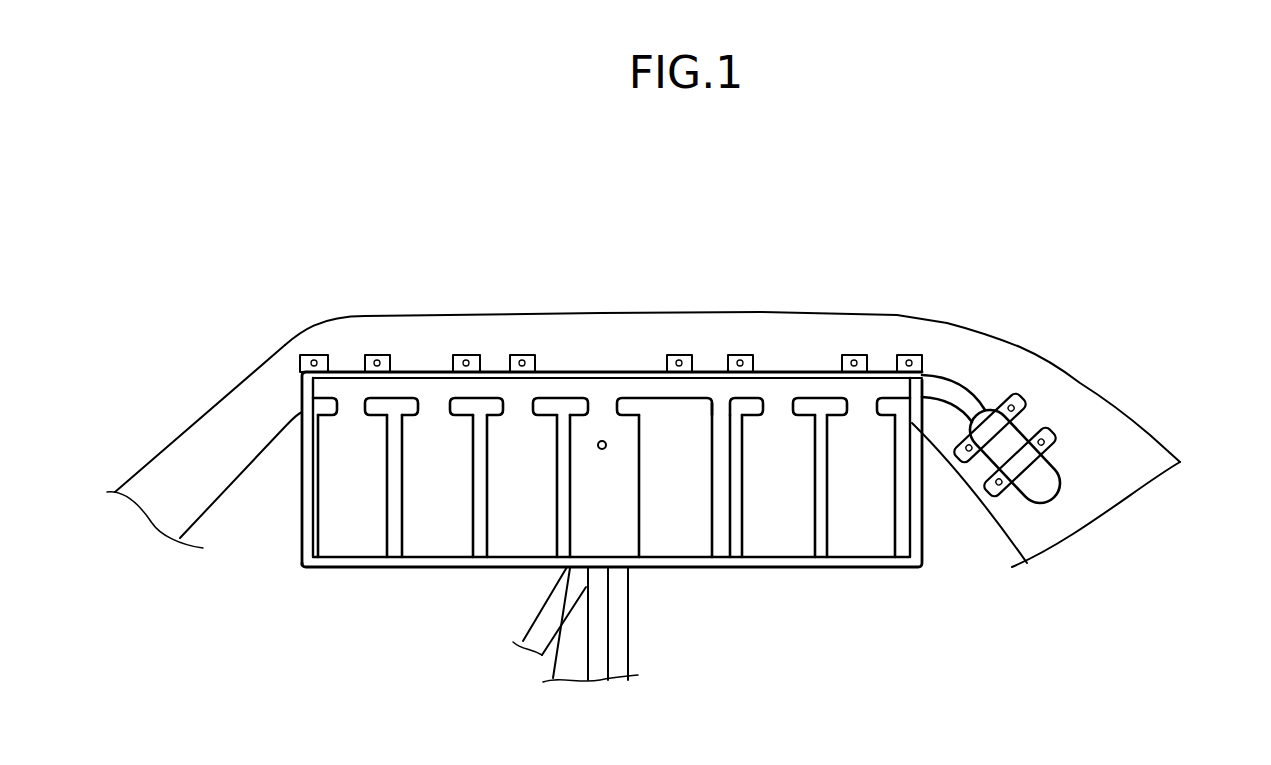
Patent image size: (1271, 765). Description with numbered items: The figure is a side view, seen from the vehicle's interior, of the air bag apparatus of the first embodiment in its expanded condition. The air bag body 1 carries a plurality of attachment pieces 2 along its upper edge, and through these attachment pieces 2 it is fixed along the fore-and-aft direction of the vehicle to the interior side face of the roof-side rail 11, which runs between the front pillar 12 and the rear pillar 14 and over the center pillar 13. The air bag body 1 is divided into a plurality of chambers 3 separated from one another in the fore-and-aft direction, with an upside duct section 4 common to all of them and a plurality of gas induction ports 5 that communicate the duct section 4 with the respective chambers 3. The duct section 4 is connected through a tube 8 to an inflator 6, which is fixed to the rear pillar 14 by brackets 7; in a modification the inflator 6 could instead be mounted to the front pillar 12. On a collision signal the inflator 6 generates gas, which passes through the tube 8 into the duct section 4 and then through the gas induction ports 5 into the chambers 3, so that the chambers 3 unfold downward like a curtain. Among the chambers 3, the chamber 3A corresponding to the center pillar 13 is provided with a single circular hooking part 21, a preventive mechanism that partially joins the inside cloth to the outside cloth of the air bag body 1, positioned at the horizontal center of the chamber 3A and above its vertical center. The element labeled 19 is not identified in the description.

The air bag body 1 is at (362, 577).
The attachment pieces 2 is at (318, 355).
The chambers 3 is at (375, 530).
The chamber 3A is at (620, 528).
The upside duct section 4 is at (642, 387).
The gas induction ports 5 is at (617, 398).
The inflator 6 is at (1059, 500).
The brackets 7 is at (1017, 404).
The tube 8 is at (960, 387).
The roof-side rail 11 is at (755, 306).
The front pillar 12 is at (219, 388).
The center pillar 13 is at (641, 634).
The rear pillar 14 is at (1154, 430).
The strap 19 is at (587, 662).
The hooking part 21 is at (606, 445).